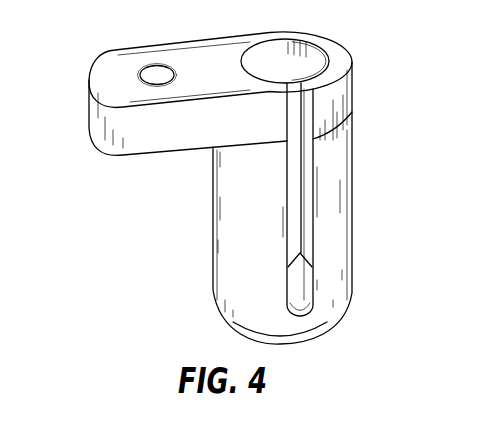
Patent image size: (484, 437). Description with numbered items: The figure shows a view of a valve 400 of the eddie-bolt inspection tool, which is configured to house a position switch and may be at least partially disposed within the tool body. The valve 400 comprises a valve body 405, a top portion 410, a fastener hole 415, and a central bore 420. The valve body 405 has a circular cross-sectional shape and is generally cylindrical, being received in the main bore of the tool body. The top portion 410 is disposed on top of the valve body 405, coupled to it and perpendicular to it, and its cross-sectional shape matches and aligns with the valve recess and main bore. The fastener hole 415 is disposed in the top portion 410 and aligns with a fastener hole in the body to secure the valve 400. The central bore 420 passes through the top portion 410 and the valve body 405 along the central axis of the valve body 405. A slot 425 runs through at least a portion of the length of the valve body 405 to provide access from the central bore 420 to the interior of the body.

The valve 400 is at (128, 240).
The valve body 405 is at (215, 268).
The top portion 410 is at (208, 32).
The fastener hole 415 is at (150, 72).
The central bore 420 is at (300, 65).
The slot 425 is at (298, 196).